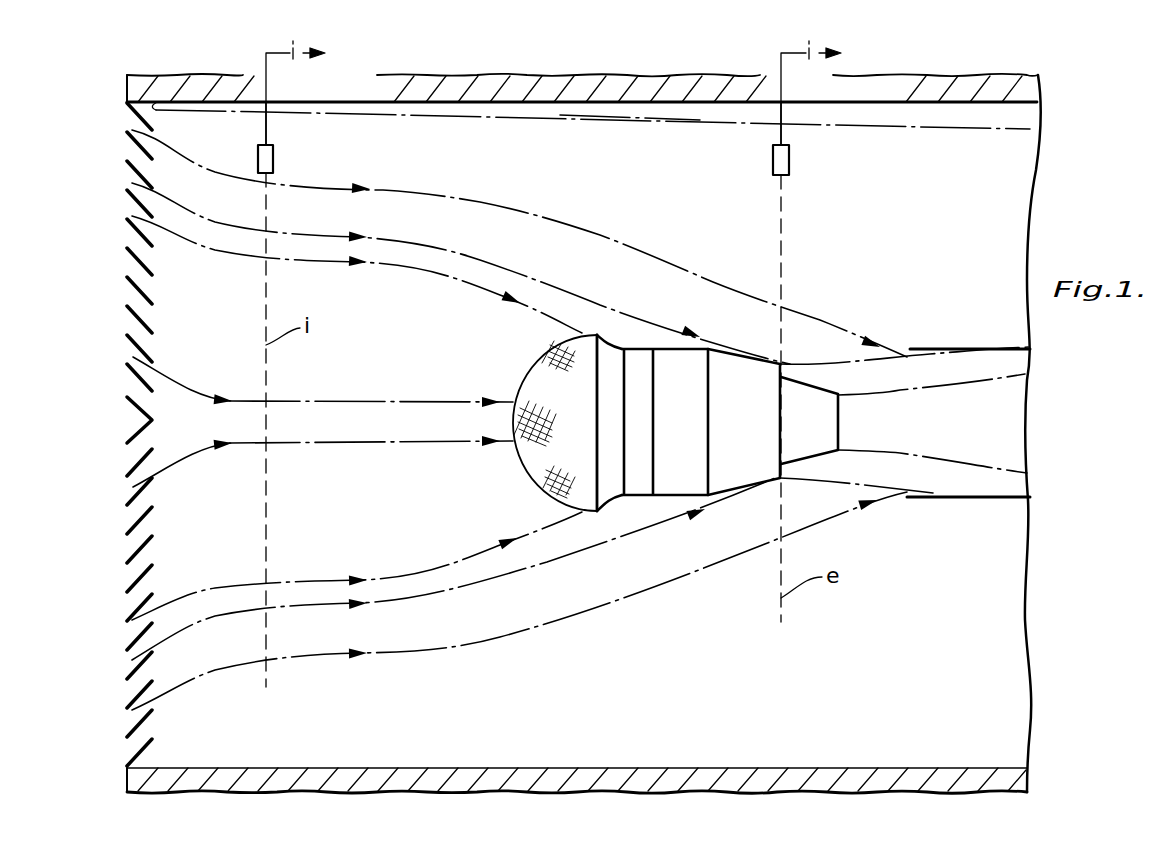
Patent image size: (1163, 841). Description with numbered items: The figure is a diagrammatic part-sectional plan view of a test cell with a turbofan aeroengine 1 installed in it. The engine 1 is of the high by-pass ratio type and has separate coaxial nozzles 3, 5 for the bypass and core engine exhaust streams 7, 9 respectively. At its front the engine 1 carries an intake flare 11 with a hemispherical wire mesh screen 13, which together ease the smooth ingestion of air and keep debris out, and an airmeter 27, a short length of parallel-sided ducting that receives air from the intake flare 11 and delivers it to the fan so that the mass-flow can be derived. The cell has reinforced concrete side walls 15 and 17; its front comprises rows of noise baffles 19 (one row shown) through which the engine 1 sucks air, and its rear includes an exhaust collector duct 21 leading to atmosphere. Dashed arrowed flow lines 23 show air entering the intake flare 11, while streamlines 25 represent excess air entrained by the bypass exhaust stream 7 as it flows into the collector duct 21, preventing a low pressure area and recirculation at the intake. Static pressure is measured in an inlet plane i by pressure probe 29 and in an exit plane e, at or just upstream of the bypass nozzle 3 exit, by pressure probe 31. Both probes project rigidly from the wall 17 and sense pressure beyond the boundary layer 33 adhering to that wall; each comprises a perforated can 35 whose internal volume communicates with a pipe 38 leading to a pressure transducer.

The turbofan aeroengine 1 is at (708, 415).
The bypass nozzle 3 is at (783, 470).
The core engine nozzle 5 is at (840, 422).
The bypass exhaust stream 7 is at (897, 484).
The core engine exhaust stream 9 is at (932, 436).
The intake flare 11 is at (608, 345).
The hemispherical wire mesh screen 13 is at (537, 460).
The side wall 15 is at (878, 770).
The side wall 17 is at (549, 115).
The noise baffles 19 is at (118, 230).
The exhaust collector duct 21 is at (926, 348).
The flow lines 23 is at (447, 280).
The streamlines of entrained air 25 is at (462, 202).
The airmeter 27 is at (641, 350).
The pressure probe 29 is at (280, 156).
The pressure probe 31 is at (796, 156).
The boundary layer 33 is at (680, 119).
The can 35 is at (258, 155).
The pipe 38 is at (266, 124).